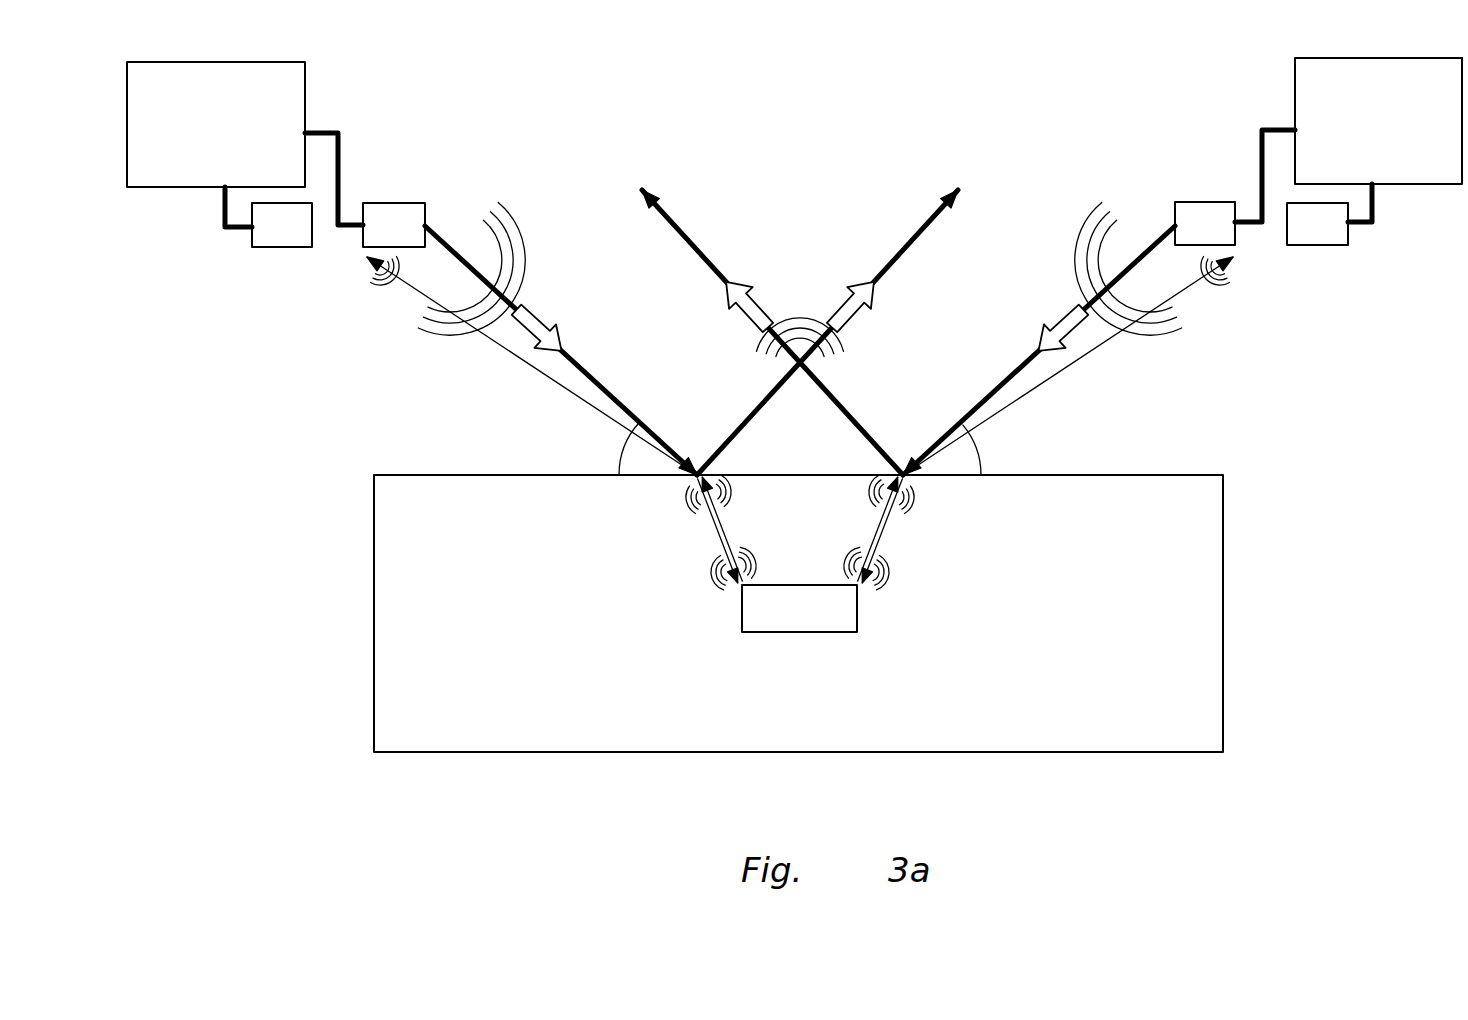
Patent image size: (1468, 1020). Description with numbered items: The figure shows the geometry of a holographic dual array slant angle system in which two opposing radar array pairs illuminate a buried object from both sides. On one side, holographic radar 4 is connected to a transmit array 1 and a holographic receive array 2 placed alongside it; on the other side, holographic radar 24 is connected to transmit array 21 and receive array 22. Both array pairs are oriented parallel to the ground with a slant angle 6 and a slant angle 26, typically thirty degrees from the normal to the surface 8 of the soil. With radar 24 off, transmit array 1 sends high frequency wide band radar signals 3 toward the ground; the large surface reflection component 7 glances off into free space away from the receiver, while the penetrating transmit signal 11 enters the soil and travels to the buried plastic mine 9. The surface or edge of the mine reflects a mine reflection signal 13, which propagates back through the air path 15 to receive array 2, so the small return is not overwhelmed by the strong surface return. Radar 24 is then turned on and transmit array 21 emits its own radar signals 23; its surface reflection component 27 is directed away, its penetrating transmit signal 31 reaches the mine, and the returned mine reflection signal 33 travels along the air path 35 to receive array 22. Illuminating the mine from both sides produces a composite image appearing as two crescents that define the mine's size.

The transmit array 1 is at (1188, 202).
The holographic receive array 2 is at (1312, 245).
The radar signals 3 is at (1078, 308).
The holographic radar 4 is at (1295, 97).
The slant angle 6 is at (980, 456).
The surface reflection component 7 is at (850, 409).
The surface 8 is at (1133, 475).
The plastic mine 9 is at (857, 610).
The transmit signal 11 is at (924, 511).
The mine reflection signal 13 is at (885, 535).
The air path 15 is at (1227, 300).
The transmit array 21 is at (412, 203).
The receive array 22 is at (287, 247).
The radar signals 23 is at (517, 307).
The holographic radar 24 is at (305, 100).
The slant angle 26 is at (619, 458).
The surface reflection component 27 is at (752, 410).
The transmit signal 31 is at (717, 530).
The mine reflection signal 33 is at (712, 532).
The air path 35 is at (373, 300).